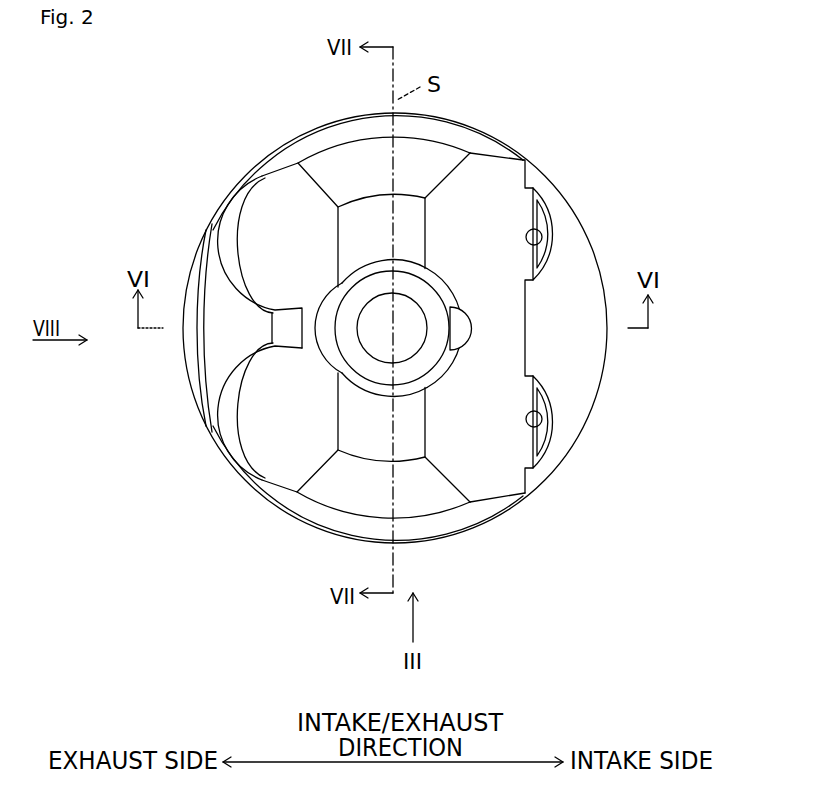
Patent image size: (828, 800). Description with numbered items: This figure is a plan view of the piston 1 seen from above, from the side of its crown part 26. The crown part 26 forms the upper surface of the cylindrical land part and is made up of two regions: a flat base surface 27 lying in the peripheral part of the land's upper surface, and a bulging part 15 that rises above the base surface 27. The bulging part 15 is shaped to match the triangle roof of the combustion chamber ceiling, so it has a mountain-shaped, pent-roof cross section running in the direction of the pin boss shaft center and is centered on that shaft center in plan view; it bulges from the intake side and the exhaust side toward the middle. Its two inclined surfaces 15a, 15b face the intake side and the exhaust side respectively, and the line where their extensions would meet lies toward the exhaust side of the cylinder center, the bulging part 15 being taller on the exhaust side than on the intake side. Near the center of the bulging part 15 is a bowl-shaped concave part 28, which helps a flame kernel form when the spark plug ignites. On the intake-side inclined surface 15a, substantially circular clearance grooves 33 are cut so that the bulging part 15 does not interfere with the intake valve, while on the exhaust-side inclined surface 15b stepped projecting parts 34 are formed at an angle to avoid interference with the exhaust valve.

The piston 1 is at (241, 117).
The bulging part 15 is at (527, 343).
The inclined surface 15a is at (495, 473).
The inclined surface 15b is at (283, 463).
The crown part 26 is at (663, 370).
The base surface 27 is at (585, 340).
The concave part 28 is at (407, 341).
The clearance grooves 33 is at (551, 253).
The stepped projecting parts 34 is at (217, 340).